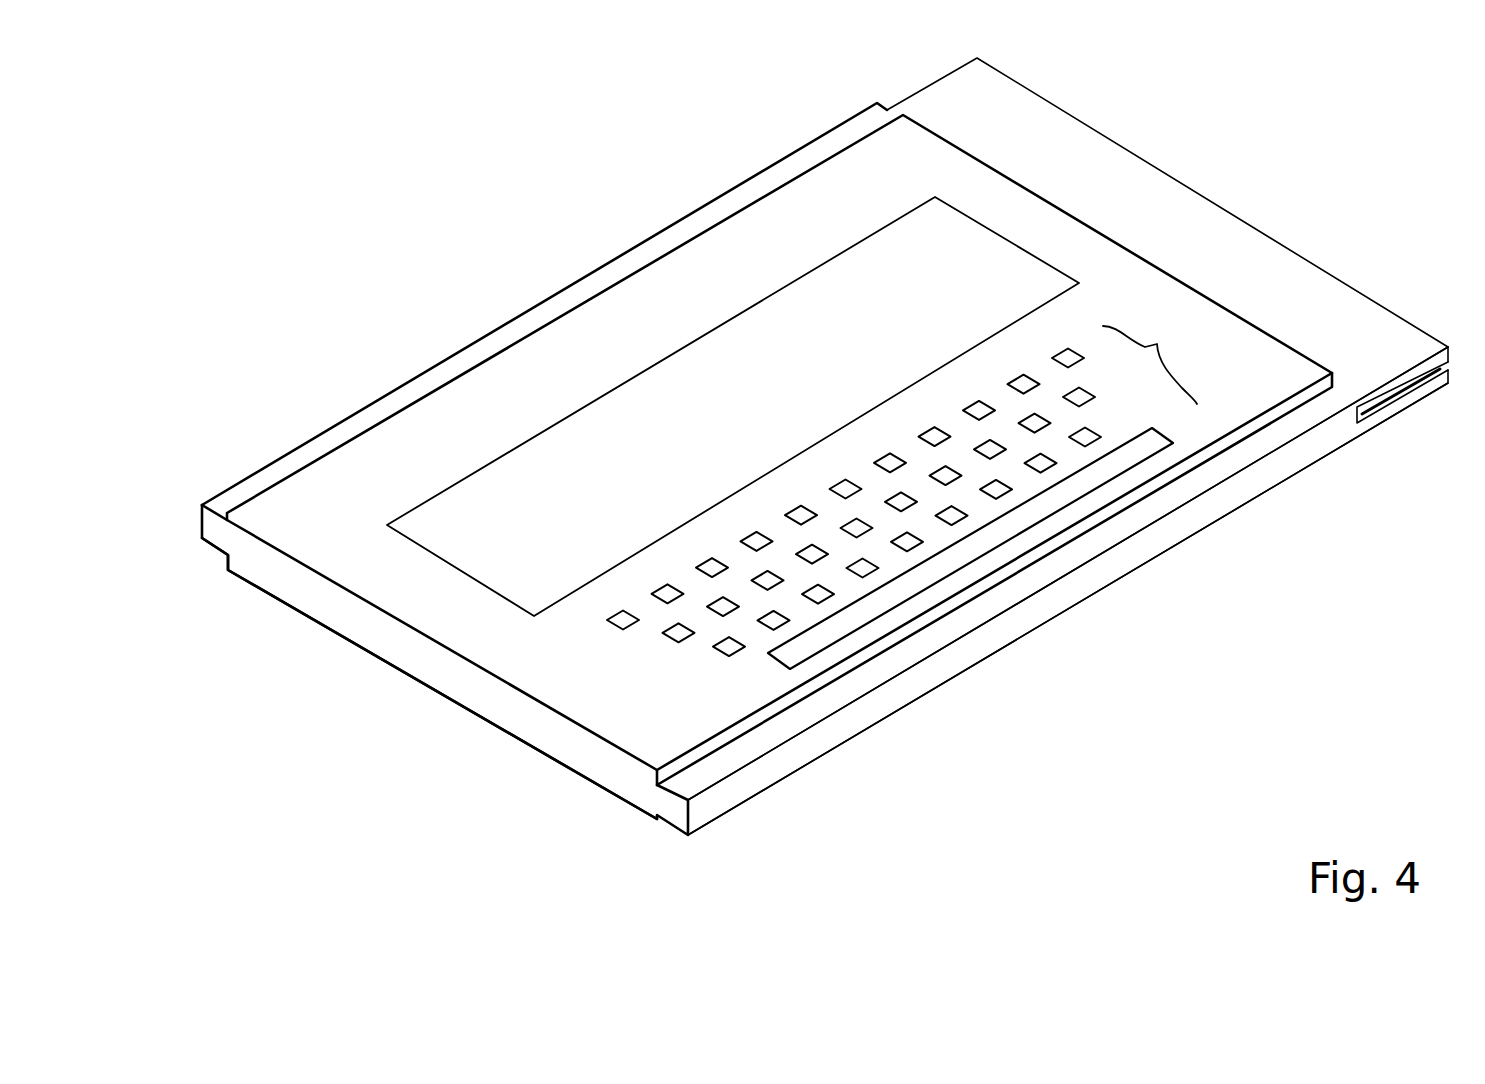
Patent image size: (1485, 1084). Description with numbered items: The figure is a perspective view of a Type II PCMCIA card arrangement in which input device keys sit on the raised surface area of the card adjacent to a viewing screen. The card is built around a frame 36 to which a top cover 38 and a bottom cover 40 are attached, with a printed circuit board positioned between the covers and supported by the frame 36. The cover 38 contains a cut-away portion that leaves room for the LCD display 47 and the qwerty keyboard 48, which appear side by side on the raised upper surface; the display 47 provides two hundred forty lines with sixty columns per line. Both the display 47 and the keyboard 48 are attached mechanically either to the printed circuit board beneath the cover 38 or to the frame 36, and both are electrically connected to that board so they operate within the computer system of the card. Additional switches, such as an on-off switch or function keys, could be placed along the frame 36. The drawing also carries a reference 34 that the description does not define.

The keyboard housing 34 is at (567, 260).
The frame 36 is at (1272, 478).
The top cover 38 is at (925, 137).
The bottom cover 40 is at (270, 595).
The LCD display 47 is at (784, 395).
The qwerty keyboard 48 is at (1162, 341).